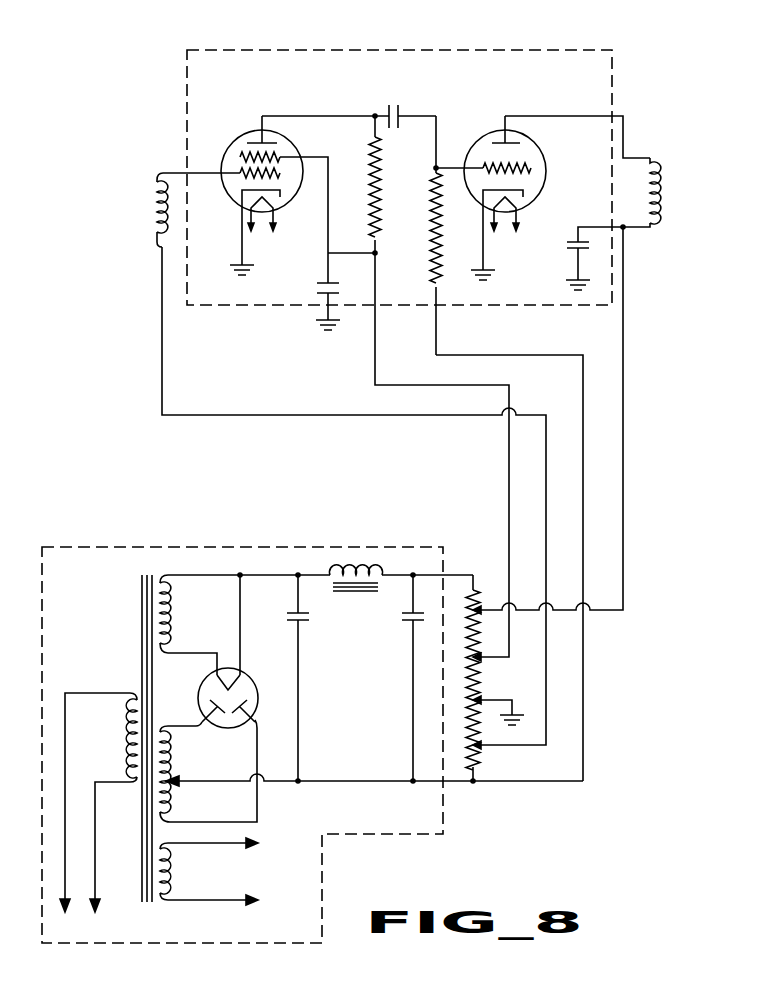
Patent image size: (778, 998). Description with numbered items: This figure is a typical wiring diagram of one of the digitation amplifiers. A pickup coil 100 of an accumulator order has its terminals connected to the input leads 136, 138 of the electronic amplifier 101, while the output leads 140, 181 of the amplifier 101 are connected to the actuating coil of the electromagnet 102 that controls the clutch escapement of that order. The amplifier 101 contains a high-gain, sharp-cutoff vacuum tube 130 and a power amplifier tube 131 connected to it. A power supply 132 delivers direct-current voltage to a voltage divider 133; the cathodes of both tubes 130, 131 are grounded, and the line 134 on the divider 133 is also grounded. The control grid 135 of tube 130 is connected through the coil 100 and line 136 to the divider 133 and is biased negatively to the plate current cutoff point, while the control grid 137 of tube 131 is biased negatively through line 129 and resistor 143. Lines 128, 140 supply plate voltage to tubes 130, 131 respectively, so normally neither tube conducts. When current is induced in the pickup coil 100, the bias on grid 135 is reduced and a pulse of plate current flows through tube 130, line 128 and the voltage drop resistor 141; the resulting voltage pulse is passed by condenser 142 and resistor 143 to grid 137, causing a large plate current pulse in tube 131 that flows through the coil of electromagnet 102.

The pickup coil 100 is at (150, 206).
The electronic amplifier 101 is at (397, 49).
The electromagnet 102 is at (659, 202).
The line 128 is at (377, 342).
The line 129 is at (583, 355).
The vacuum tube 130 is at (223, 158).
The power amplifier tube 131 is at (484, 132).
The power supply 132 is at (222, 547).
The voltage divider 133 is at (463, 684).
The line 134 is at (497, 700).
The control grid 135 is at (246, 175).
The input lead 136 is at (362, 415).
The control grid 137 is at (530, 165).
The input lead 138 is at (177, 172).
The output lead 140 is at (623, 388).
The voltage drop resistor 141 is at (373, 155).
The condenser 142 is at (400, 112).
The resistor 143 is at (432, 270).
The output lead 181 is at (625, 137).